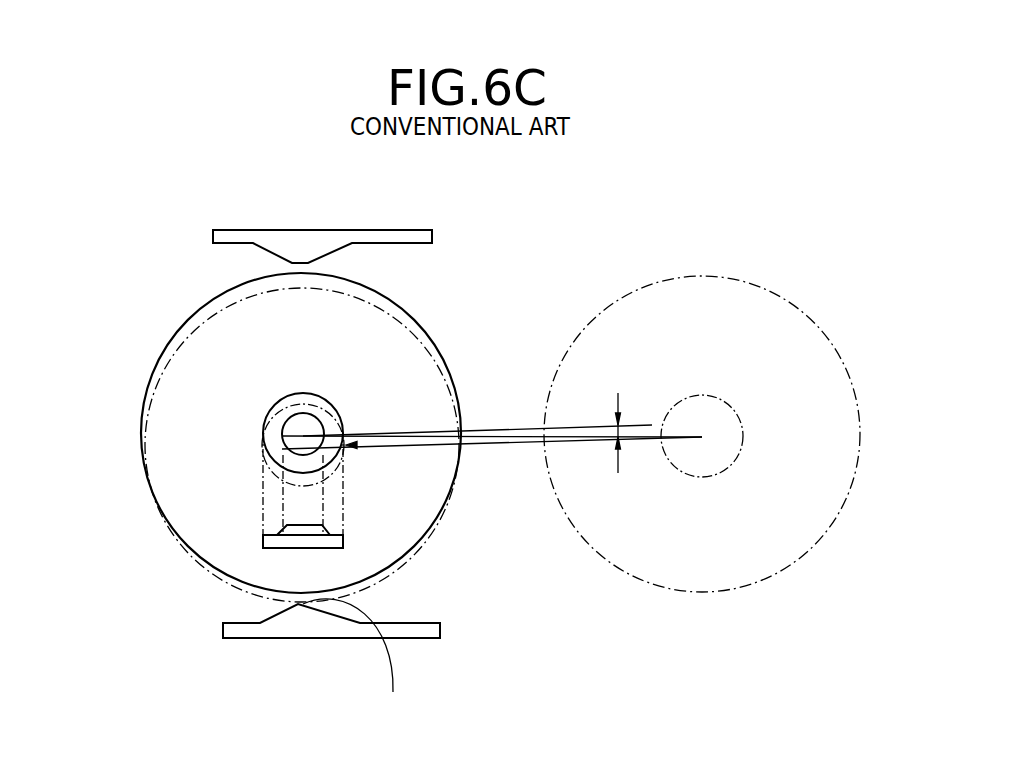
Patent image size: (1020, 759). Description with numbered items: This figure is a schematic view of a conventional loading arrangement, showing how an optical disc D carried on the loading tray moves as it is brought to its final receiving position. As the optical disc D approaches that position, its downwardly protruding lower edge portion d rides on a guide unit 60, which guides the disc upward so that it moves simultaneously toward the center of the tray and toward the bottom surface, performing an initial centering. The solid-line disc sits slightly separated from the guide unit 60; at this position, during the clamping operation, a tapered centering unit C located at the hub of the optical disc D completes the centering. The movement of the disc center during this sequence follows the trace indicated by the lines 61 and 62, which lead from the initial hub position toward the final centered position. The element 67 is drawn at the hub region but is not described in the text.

The guide unit 60 is at (301, 630).
The trace 61 is at (422, 446).
The trace 62 is at (300, 447).
The hub 67 is at (290, 433).
The optical disc D is at (213, 319).
The tapered centering unit C is at (303, 523).
The lower edge portion d is at (350, 661).